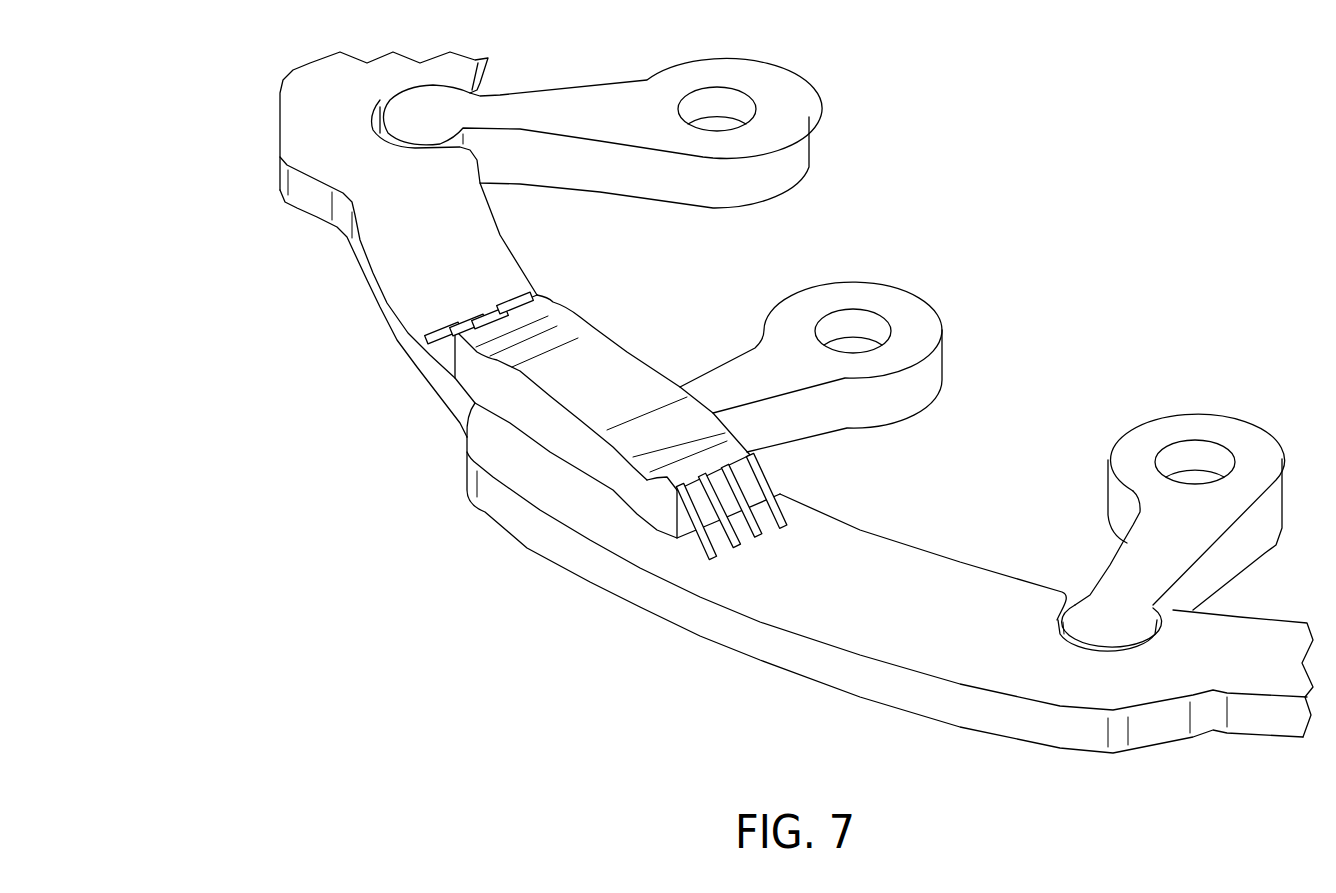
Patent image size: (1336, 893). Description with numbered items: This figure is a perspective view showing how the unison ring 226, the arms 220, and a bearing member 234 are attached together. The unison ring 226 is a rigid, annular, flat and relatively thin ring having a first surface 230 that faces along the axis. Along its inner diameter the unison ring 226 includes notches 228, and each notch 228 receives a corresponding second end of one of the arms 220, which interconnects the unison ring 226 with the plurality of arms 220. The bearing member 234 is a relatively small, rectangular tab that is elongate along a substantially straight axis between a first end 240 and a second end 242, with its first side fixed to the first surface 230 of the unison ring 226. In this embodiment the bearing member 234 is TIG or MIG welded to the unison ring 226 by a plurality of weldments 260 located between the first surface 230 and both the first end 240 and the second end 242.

The arm 220 is at (815, 129).
The unison ring 226 is at (268, 160).
The inner diameter notch 228 is at (1066, 649).
The first surface 230 is at (955, 633).
The bearing member 234 is at (616, 364).
The first end 240 is at (540, 308).
The second end 242 is at (668, 476).
The weldment 260 is at (493, 305).